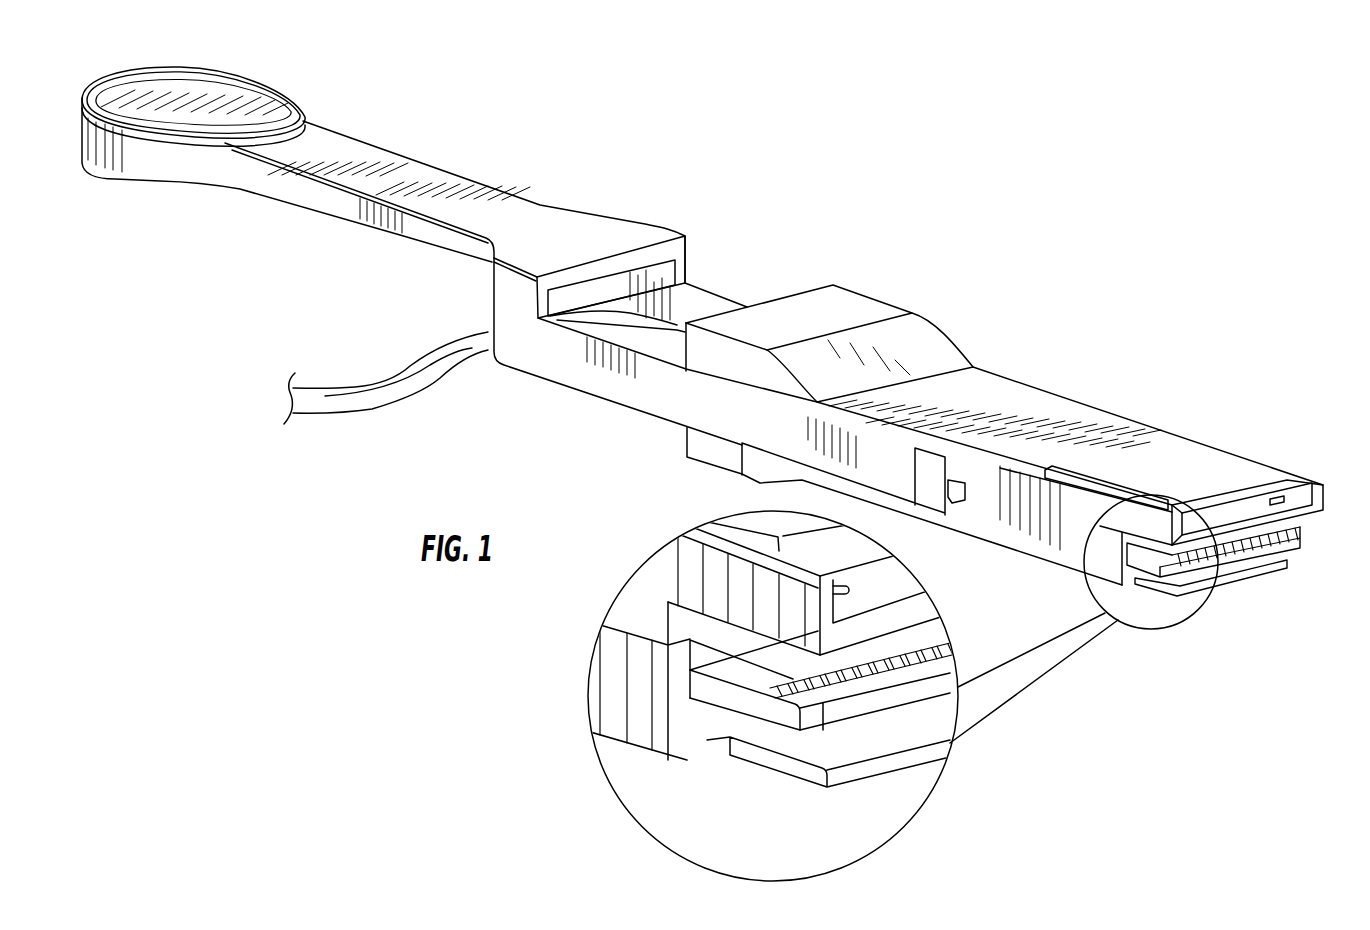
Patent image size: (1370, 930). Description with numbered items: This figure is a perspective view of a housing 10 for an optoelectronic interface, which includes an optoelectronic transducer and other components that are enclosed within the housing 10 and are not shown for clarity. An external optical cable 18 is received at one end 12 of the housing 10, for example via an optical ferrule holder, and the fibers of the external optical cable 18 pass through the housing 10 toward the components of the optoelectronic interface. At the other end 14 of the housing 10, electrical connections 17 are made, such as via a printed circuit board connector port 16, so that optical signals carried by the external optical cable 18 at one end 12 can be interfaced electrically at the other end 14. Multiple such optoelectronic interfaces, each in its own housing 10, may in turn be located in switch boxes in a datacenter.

The housing 10 is at (1027, 392).
The one end 12 is at (788, 251).
The other end 14 is at (1277, 378).
The printed circuit board connector port 16 is at (1220, 565).
The electrical connections 17 is at (1277, 548).
The external optical cable 18 is at (618, 326).